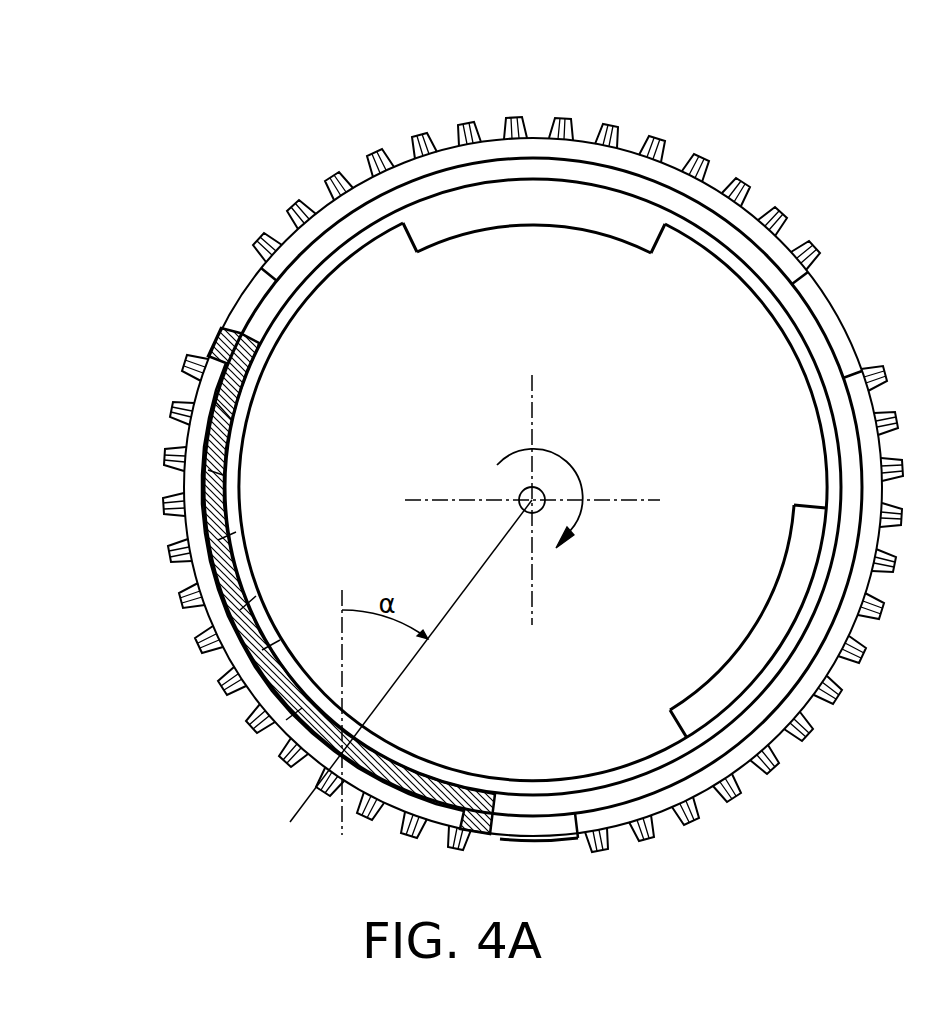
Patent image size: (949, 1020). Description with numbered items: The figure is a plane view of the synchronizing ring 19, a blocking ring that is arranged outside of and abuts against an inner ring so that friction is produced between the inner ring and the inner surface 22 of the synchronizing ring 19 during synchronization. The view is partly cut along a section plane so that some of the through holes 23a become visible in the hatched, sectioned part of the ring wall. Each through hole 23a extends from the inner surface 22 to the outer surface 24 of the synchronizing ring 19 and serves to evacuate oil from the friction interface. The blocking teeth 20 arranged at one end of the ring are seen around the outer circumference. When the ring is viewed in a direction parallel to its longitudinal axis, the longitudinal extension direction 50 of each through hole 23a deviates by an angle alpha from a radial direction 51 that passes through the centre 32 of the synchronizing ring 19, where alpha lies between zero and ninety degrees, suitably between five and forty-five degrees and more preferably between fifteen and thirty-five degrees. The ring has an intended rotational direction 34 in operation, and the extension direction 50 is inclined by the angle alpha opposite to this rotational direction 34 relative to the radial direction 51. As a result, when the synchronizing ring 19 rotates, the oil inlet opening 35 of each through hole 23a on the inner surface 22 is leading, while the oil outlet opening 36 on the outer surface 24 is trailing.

The synchronizing ring 19 is at (778, 138).
The blocking teeth 20 is at (338, 184).
The inner surface 22 is at (258, 480).
The through holes 23a is at (242, 462).
The outer surface 24 is at (200, 620).
The centre 32 is at (540, 490).
The intended rotational direction 34 is at (580, 463).
The oil inlet opening 35 is at (254, 640).
The oil outlet opening 36 is at (266, 700).
The longitudinal extension direction 50 is at (338, 820).
The radial direction 51 is at (290, 812).